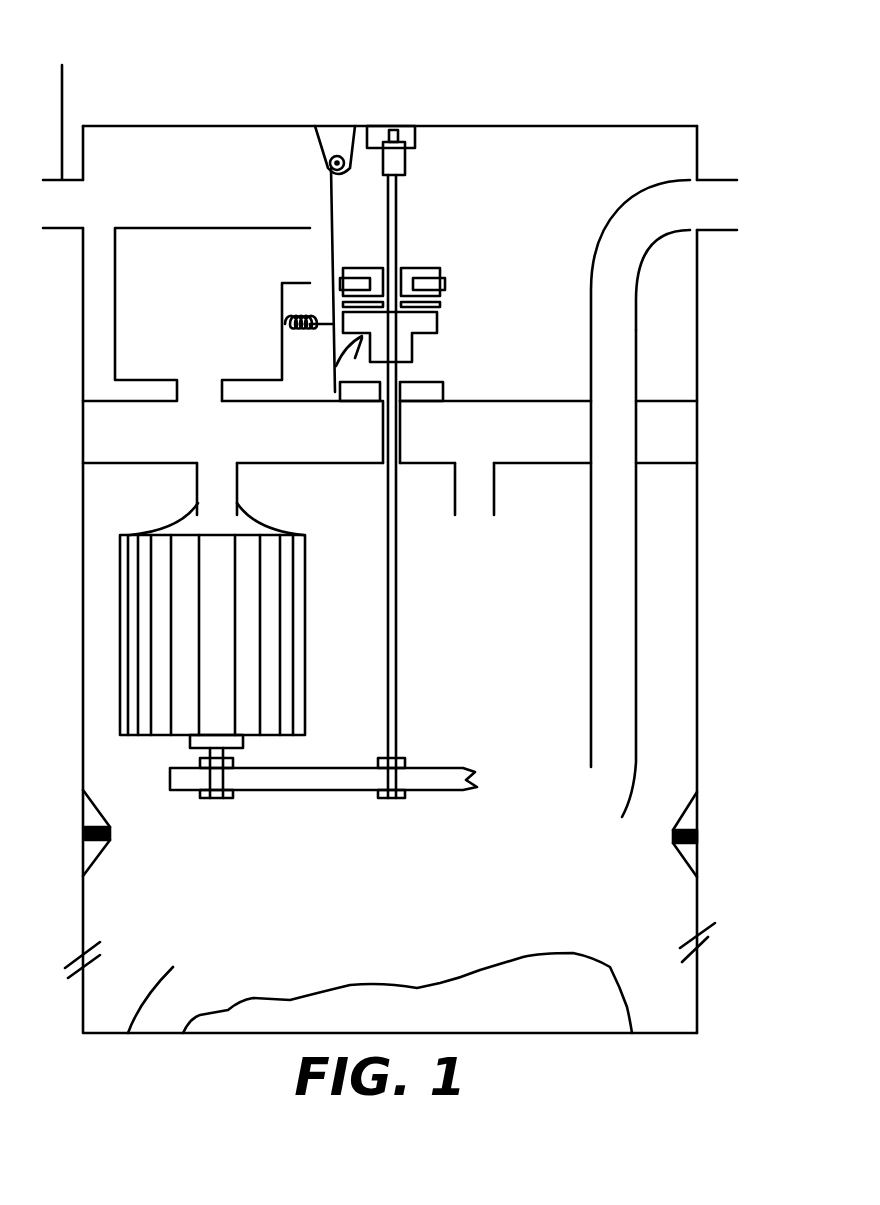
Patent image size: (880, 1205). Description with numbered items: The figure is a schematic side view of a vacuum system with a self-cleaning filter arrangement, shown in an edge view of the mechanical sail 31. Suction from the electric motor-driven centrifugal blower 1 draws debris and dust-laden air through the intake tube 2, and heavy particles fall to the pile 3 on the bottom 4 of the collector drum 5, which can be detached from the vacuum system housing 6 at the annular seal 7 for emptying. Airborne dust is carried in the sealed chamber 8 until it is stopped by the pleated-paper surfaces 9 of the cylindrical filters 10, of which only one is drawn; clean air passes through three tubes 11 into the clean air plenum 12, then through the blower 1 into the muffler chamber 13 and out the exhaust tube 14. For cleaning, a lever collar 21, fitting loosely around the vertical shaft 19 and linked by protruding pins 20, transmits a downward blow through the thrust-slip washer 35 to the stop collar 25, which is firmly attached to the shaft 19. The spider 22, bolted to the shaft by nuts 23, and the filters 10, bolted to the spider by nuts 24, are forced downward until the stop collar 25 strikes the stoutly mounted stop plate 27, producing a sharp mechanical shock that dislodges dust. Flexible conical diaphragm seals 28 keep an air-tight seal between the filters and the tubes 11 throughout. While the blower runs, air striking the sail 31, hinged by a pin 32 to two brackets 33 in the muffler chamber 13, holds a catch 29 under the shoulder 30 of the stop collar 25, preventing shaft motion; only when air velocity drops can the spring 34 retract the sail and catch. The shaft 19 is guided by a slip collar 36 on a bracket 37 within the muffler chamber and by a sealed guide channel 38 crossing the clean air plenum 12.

The blower 1 is at (135, 228).
The intake tube 2 is at (718, 178).
The pile 3 is at (503, 963).
The bottom 4 is at (161, 988).
The collector drum 5 is at (700, 905).
The vacuum system housing 6 is at (700, 333).
The annular seal 7 is at (85, 834).
The sealed chamber 8 is at (665, 628).
The pleated-paper surfaces 9 is at (282, 652).
The cylindrical filters 10 is at (163, 737).
The tubes 11 is at (237, 487).
The clean air plenum 12 is at (148, 430).
The muffler chamber 13 is at (565, 168).
The exhaust tube 14 is at (65, 128).
The vertical shaft 19 is at (400, 188).
The protruding pins 20 is at (357, 273).
The lever collar 21 is at (413, 265).
The spider 22 is at (325, 790).
The nuts 23 is at (405, 760).
The nuts 24 is at (233, 762).
The stop collar 25 is at (440, 327).
The stop plate 27 is at (445, 393).
The flexible conical diaphragm seals 28 is at (287, 525).
The catch 29 is at (350, 340).
The shoulder 30 is at (356, 362).
The sail 31 is at (330, 247).
The pin 32 is at (342, 157).
The brackets 33 is at (322, 158).
The spring 34 is at (308, 338).
The thrust-slip washer 35 is at (443, 305).
The slip collar 36 is at (405, 160).
The bracket 37 is at (415, 135).
The guide channel 38 is at (380, 433).